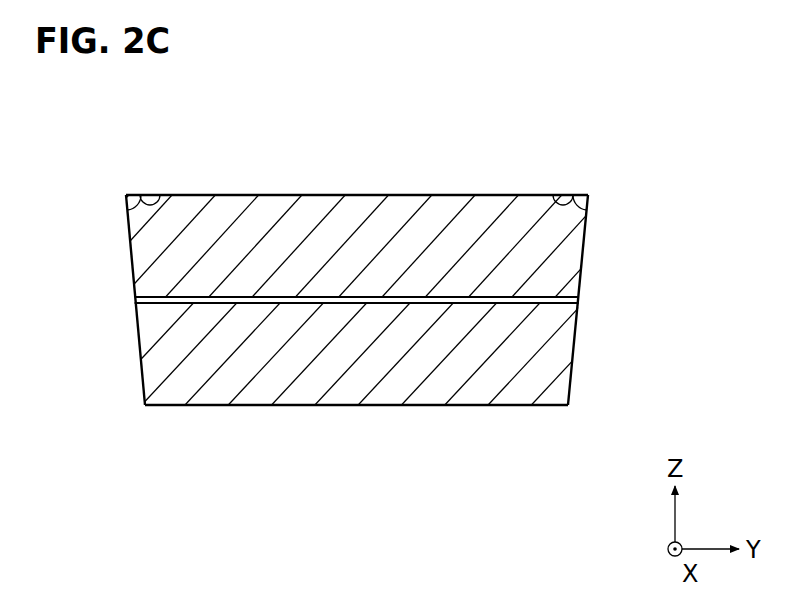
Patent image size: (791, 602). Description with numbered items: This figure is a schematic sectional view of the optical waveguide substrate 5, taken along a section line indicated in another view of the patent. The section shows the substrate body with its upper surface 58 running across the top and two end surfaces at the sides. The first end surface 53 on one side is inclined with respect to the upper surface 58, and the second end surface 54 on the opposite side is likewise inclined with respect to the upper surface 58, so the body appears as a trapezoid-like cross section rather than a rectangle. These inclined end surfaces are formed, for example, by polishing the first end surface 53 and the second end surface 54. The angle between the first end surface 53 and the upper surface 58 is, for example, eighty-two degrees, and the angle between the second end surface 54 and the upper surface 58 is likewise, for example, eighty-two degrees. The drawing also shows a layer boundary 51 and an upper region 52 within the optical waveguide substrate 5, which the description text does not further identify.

The optical waveguide substrate 5 is at (246, 168).
The bonding layer 51 is at (497, 297).
The upper layer 52 is at (448, 210).
The first end surface 53 is at (583, 255).
The second end surface 54 is at (132, 258).
The upper surface 58 is at (330, 195).